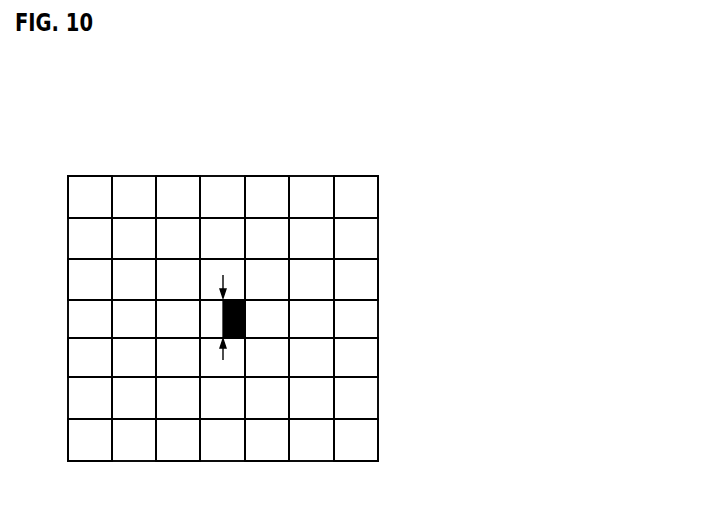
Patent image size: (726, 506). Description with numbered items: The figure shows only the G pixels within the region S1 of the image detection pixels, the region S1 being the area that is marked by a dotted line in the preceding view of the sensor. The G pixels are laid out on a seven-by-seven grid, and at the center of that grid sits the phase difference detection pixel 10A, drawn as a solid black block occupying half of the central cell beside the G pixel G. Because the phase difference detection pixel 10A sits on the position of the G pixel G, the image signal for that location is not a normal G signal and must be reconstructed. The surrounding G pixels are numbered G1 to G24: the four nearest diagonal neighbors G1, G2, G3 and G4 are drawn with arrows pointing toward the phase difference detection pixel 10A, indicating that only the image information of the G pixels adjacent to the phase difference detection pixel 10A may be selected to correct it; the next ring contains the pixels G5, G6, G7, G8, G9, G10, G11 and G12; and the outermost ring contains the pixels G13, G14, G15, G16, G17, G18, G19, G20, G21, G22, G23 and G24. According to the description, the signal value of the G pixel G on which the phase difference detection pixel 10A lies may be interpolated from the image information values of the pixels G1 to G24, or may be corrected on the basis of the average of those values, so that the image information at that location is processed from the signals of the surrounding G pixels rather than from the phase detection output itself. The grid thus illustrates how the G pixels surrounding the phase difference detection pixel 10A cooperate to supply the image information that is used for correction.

The phase difference detection pixel 10A is at (245, 308).
The region S1 is at (80, 139).
The G pixel G is at (222, 319).
The G pixel G1 is at (195, 293).
The G pixel G2 is at (249, 290).
The G pixel G3 is at (251, 346).
The G pixel G4 is at (192, 344).
The G pixel G5 is at (222, 238).
The G pixel G6 is at (311, 238).
The G pixel G7 is at (311, 319).
The G pixel G8 is at (311, 398).
The G pixel G9 is at (222, 398).
The G pixel G10 is at (134, 398).
The G pixel G11 is at (134, 319).
The G pixel G12 is at (134, 238).
The G pixel G13 is at (267, 197).
The G pixel G14 is at (356, 197).
The G pixel G15 is at (356, 279).
The G pixel G16 is at (356, 357).
The G pixel G17 is at (356, 440).
The G pixel G18 is at (267, 440).
The G pixel G19 is at (178, 440).
The G pixel G20 is at (90, 440).
The G pixel G21 is at (90, 357).
The G pixel G22 is at (90, 279).
The G pixel G23 is at (90, 197).
The G pixel G24 is at (178, 197).